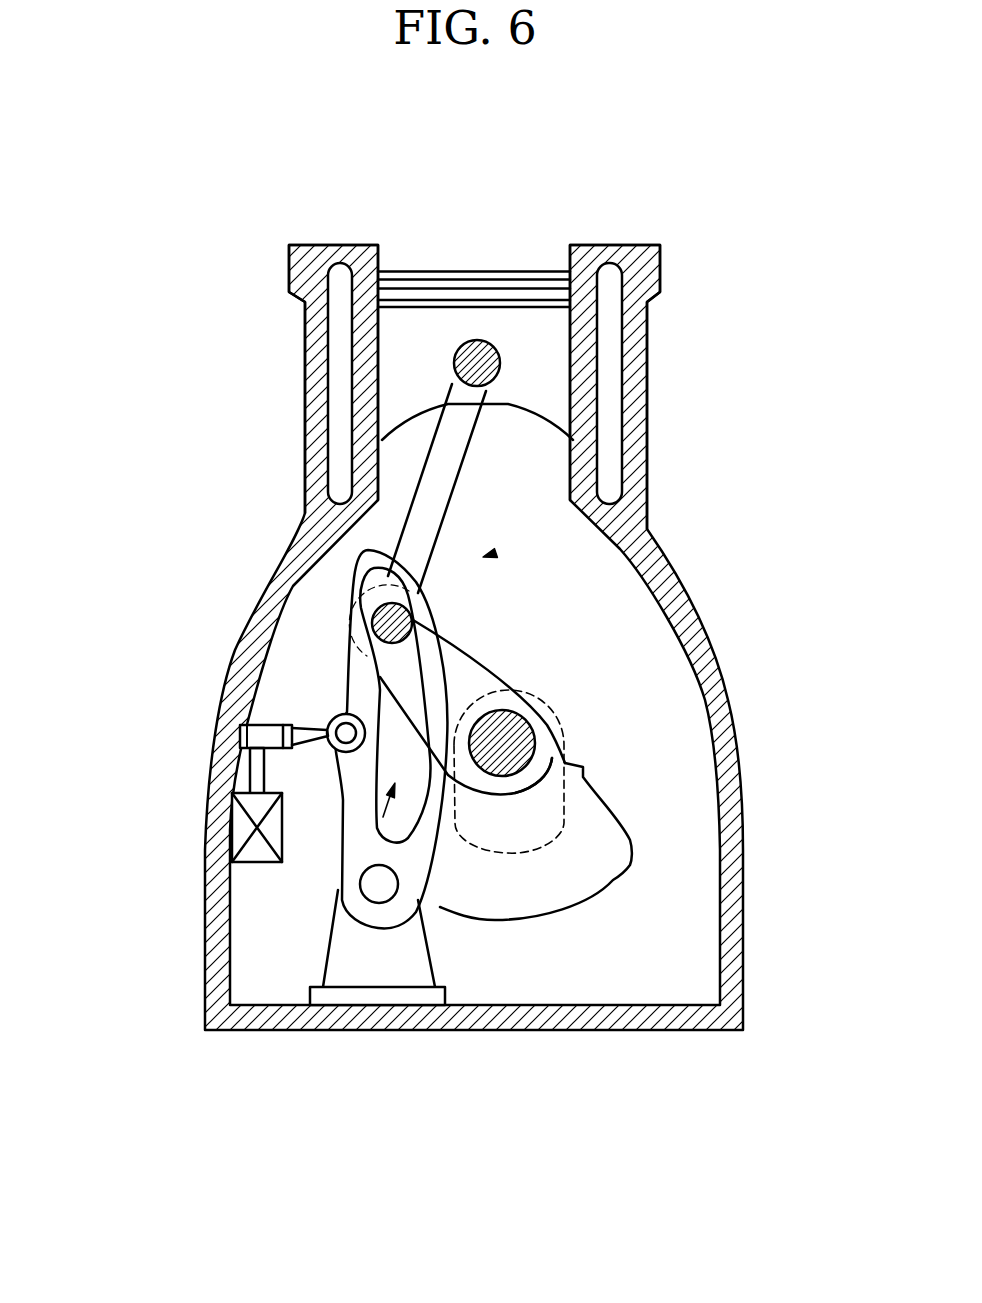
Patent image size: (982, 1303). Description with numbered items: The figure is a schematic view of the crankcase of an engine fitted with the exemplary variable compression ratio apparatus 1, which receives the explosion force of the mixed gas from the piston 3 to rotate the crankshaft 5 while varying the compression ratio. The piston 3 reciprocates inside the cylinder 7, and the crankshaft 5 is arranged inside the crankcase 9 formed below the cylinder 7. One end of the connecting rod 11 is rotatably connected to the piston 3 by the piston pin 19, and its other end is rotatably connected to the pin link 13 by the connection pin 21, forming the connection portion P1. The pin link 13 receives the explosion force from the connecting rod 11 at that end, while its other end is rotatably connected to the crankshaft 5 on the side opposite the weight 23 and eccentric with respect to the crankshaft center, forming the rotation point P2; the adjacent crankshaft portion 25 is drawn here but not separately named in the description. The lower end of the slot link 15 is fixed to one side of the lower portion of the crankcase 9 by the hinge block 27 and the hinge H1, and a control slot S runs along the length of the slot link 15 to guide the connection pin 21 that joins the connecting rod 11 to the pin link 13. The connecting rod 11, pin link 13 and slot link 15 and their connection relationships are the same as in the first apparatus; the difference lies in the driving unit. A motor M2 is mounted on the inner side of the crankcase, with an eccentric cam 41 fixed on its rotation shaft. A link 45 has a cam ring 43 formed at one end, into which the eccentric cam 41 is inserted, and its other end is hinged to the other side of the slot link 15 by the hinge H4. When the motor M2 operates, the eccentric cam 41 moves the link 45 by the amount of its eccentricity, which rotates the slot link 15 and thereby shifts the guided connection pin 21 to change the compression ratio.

The variable compression ratio apparatus 1 is at (492, 554).
The piston 3 is at (540, 333).
The crankshaft 5 is at (566, 793).
The cylinder 7 is at (583, 377).
The crankcase 9 is at (715, 677).
The connecting rod 11 is at (430, 487).
The pin link 13 is at (480, 670).
The slot link 15 is at (349, 598).
The piston pin 19 is at (472, 340).
The connection pin 21 is at (360, 586).
The counterweight 23 is at (597, 860).
The crank pin journal 25 is at (538, 722).
The hinge block 27 is at (418, 978).
The eccentric cam 41 is at (263, 730).
The cam ring 43 is at (308, 742).
The link 45 is at (292, 722).
The hinge H1 is at (381, 890).
The hinge H4 is at (320, 706).
The motor M2 is at (240, 842).
The connection portion P1 is at (423, 620).
The rotation point P2 is at (520, 717).
The control slot S is at (383, 817).